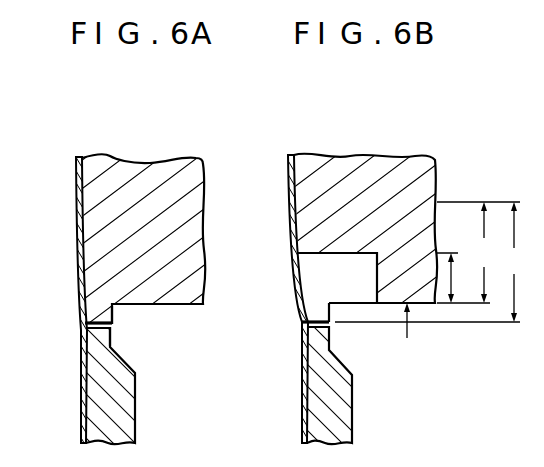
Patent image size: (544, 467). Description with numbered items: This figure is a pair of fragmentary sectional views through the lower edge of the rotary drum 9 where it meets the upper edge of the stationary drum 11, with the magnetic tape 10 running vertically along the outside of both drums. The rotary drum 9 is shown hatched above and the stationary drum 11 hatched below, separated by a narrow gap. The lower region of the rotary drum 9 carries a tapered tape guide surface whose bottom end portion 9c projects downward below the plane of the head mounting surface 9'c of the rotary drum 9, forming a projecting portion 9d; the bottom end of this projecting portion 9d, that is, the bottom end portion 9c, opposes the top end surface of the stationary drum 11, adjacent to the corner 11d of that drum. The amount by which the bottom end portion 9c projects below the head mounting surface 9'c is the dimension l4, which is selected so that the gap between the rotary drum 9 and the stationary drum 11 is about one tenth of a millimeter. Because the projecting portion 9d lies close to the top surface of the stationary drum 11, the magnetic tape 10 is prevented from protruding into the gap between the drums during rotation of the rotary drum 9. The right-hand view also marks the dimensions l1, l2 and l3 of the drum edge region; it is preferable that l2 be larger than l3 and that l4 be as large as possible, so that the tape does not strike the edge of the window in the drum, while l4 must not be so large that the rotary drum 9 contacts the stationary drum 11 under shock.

In FIG. 6A, the rotary drum 9 is at (272, 288).
In FIG. 6B, the rotary drum 9 is at (272, 288).
In FIG. 6A, the magnetic tape 10 is at (76, 197).
In FIG. 6B, the magnetic tape 10 is at (288, 195).
In FIG. 6A, the stationary drum 11 is at (131, 427).
In FIG. 6B, the stationary drum 11 is at (345, 428).
In FIG. 6A, the bottom end surface 9c is at (84, 323).
In FIG. 6B, the bottom end surface 9c is at (304, 322).
In FIG. 6A, the projecting portion 9d is at (93, 312).
In FIG. 6A, the corner of member 11 11d is at (103, 331).
In FIG. 6A, the head mounting surface 9'c is at (157, 329).
In FIG. 6B, the head mounting surface 9'c is at (425, 334).
In FIG. 6B, the dimension l1 is at (520, 262).
In FIG. 6B, the dimension l2 is at (488, 252).
In FIG. 6B, the dimension l3 is at (463, 278).
In FIG. 6B, the dimension l4 is at (410, 337).